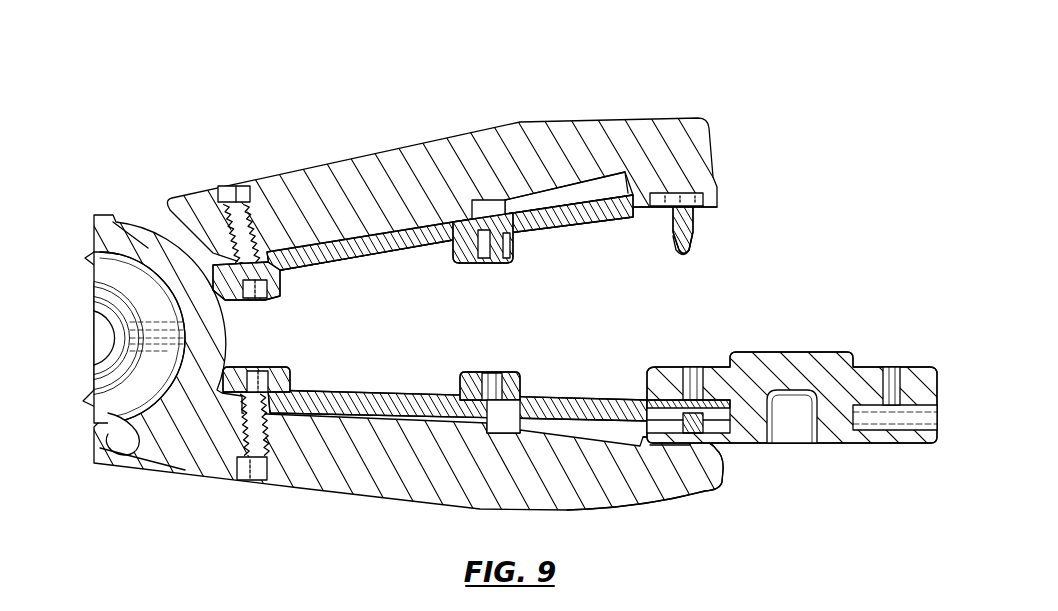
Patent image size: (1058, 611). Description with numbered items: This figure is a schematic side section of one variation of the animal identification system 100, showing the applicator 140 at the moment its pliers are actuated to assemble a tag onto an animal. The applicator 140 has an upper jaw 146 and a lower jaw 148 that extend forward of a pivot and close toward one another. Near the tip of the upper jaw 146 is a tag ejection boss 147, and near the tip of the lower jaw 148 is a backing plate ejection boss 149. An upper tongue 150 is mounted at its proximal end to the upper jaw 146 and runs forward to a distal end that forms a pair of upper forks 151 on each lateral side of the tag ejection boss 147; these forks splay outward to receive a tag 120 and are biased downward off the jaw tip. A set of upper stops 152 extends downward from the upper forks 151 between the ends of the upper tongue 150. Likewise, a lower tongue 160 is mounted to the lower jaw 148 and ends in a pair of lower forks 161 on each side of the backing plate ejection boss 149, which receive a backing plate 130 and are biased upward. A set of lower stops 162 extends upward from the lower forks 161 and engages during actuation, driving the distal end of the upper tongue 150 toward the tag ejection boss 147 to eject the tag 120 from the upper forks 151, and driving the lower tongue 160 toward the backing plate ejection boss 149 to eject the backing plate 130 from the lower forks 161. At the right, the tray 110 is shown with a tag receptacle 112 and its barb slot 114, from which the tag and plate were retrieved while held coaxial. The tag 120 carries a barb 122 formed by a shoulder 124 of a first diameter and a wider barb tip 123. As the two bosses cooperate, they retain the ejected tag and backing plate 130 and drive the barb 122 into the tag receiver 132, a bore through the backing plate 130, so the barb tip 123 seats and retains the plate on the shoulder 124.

The animal identification system 100 is at (126, 148).
The tray 110 is at (783, 386).
The tag receptacle 112 is at (706, 349).
The barb slot 114 is at (690, 373).
The tag 120 is at (736, 181).
The barb 122 is at (750, 246).
The barb tip 123 is at (693, 243).
The shoulder 124 is at (693, 220).
The backing plate 130 is at (743, 437).
The tag receiver 132 is at (720, 427).
The applicator 140 is at (193, 450).
The upper jaw 146 is at (516, 138).
The tag ejection boss 147 is at (673, 177).
The lower jaw 148 is at (693, 470).
The backing plate ejection boss 149 is at (683, 447).
The upper tongue 150 is at (451, 170).
The upper forks 151 is at (586, 200).
The upper stops 152 is at (462, 216).
The lower tongue 160 is at (455, 375).
The lower forks 161 is at (587, 410).
The lower stops 162 is at (492, 373).